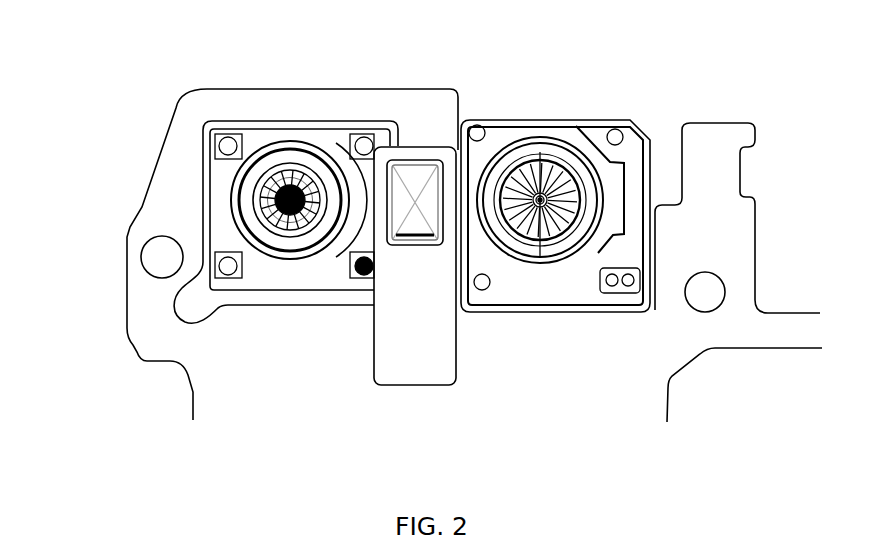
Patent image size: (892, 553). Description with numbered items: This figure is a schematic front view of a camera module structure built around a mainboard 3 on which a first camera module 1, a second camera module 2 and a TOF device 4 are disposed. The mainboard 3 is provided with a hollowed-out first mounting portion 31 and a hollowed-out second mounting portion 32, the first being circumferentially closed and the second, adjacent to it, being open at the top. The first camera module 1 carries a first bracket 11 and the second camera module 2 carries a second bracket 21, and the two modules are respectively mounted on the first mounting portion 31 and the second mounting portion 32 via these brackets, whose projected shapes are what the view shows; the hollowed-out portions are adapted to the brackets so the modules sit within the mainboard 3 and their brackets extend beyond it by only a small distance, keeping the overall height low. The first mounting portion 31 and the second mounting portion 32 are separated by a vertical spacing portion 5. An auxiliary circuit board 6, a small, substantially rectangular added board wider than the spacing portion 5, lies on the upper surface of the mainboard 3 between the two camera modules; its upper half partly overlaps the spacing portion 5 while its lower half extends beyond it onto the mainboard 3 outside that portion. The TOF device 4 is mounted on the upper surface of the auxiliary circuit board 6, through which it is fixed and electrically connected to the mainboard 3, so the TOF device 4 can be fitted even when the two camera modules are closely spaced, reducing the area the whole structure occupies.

The first camera module 1 is at (280, 160).
The second camera module 2 is at (542, 160).
The mainboard 3 is at (303, 102).
The TOF device 4 is at (422, 172).
The spacing portion 5 is at (417, 135).
The auxiliary circuit board 6 is at (420, 368).
The first bracket 11 is at (227, 180).
The second bracket 21 is at (587, 152).
The first mounting portion 31 is at (315, 300).
The second mounting portion 32 is at (560, 308).